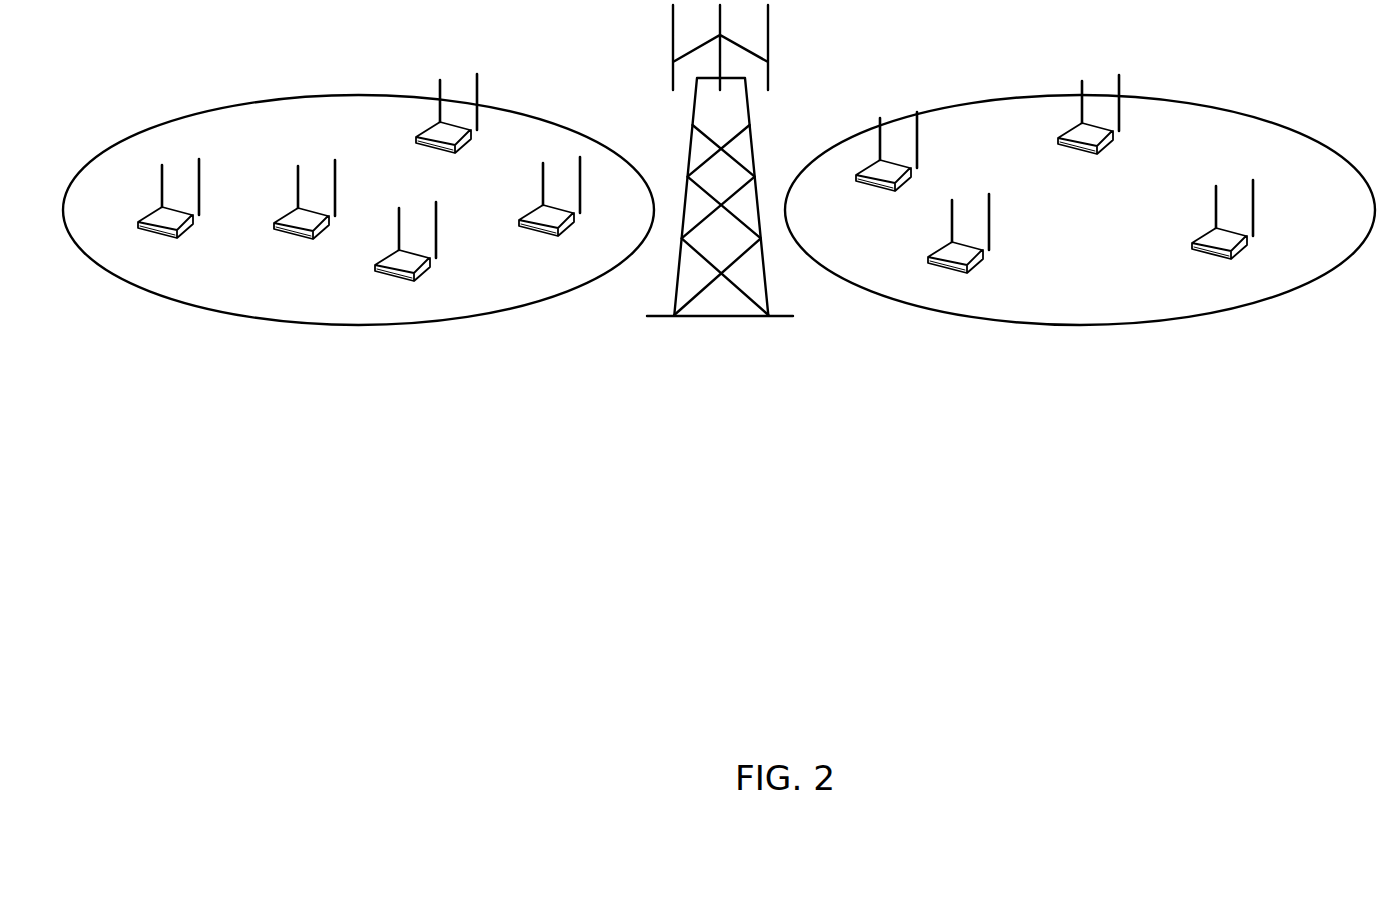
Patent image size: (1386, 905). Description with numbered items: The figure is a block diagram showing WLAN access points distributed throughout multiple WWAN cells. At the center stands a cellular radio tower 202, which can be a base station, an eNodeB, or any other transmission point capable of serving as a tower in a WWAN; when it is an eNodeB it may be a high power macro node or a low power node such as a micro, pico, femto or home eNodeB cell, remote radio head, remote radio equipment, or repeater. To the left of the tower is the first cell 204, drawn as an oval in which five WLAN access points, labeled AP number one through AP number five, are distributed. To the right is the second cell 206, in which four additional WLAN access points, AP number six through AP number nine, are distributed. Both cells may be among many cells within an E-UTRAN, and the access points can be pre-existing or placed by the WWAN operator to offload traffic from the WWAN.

The cellular radio tower 202 is at (723, 318).
The first cell 204 is at (355, 325).
The second cell 206 is at (1088, 325).